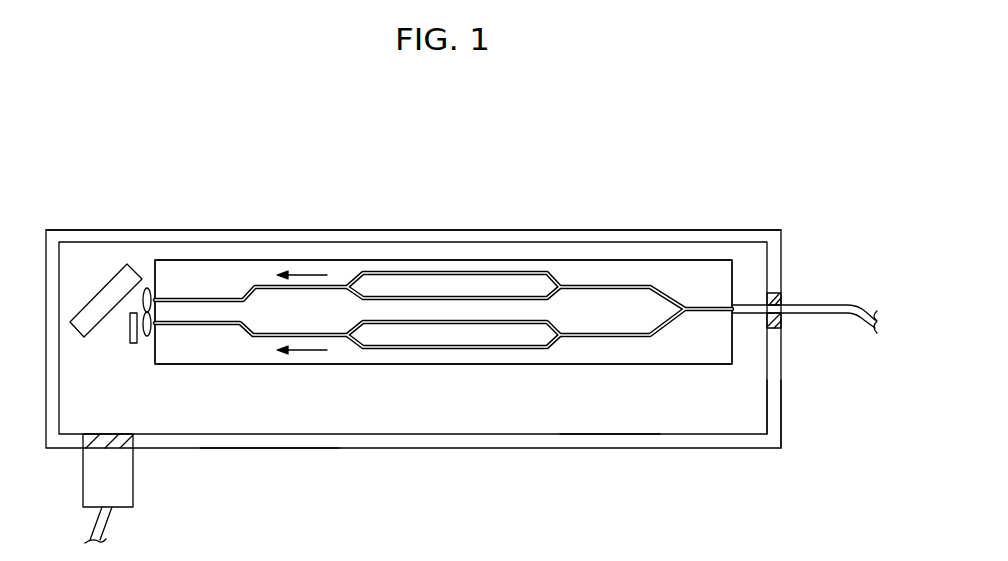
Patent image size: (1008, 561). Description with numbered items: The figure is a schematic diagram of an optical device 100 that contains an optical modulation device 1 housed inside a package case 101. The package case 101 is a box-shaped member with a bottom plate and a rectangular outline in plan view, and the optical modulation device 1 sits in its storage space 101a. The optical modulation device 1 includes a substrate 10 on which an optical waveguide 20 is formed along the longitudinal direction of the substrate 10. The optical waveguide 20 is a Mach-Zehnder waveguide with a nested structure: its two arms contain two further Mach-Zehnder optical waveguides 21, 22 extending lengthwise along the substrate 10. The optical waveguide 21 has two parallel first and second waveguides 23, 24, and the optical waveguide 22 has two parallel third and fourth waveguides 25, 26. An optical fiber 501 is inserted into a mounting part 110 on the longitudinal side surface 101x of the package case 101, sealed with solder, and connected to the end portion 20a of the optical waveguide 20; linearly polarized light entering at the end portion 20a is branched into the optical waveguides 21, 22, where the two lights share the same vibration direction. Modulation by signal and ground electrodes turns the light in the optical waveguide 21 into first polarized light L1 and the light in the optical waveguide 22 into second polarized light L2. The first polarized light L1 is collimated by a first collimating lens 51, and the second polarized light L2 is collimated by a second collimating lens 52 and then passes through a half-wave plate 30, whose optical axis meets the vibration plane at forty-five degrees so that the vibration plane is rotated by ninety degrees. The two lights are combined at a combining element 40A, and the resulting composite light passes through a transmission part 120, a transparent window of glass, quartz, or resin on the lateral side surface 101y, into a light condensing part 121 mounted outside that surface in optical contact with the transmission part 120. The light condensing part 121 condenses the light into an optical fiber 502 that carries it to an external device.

The optical device 100 is at (661, 148).
The optical modulation device 1 is at (509, 382).
The substrate 10 is at (634, 262).
The optical waveguide 20 is at (690, 286).
The end portion of the optical waveguide 20a is at (736, 301).
The optical waveguide 21 is at (204, 297).
The optical waveguide 22 is at (204, 326).
The first waveguide 23 is at (402, 271).
The second waveguide 24 is at (470, 296).
The third waveguide 25 is at (395, 325).
The fourth waveguide 26 is at (450, 349).
The half-wave plate 30 is at (129, 333).
The combining element 40A is at (94, 306).
The first collimating lens 51 is at (146, 288).
The second collimating lens 52 is at (146, 336).
The package case 101 is at (687, 440).
The storage space 101a is at (610, 422).
The side surface 101x is at (781, 416).
The side surface 101y is at (268, 448).
The mounting part 110 is at (778, 328).
The transmission part 120 is at (108, 440).
The light condensing part 121 is at (122, 487).
The optical fiber 501 is at (860, 305).
The optical fiber 502 is at (113, 520).
The first polarized light L1 is at (303, 272).
The second polarized light L2 is at (305, 353).